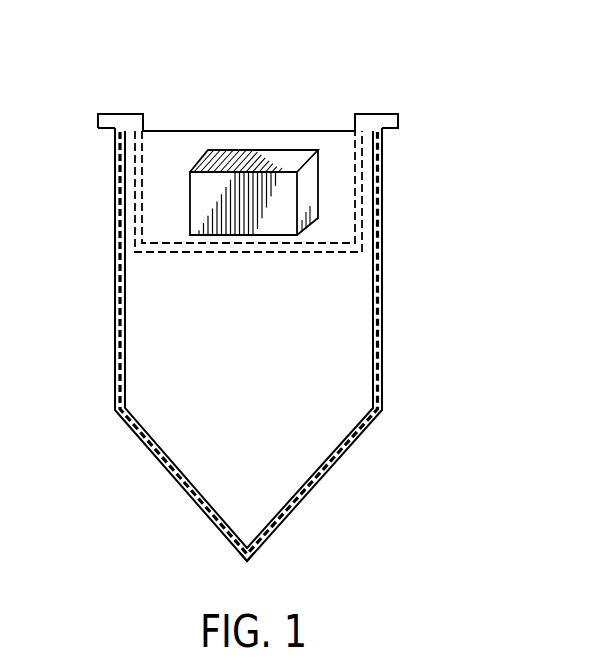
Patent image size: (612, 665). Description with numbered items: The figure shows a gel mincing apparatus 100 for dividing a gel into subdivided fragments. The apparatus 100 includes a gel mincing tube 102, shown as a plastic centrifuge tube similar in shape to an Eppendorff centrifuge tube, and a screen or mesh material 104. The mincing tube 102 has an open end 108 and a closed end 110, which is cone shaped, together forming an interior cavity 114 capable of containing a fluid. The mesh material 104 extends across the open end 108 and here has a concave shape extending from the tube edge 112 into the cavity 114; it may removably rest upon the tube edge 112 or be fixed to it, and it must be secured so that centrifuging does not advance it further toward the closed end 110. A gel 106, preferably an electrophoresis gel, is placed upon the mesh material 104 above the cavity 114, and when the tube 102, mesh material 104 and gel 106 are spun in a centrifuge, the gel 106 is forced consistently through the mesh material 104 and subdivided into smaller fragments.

The gel mincing apparatus 100 is at (520, 102).
The gel mincing tube 102 is at (383, 318).
The mesh material 104 is at (355, 177).
The gel 106 is at (275, 158).
The open end 108 is at (385, 114).
The closed end 110 is at (265, 543).
The tube edge 112 is at (100, 130).
The interior cavity 114 is at (272, 387).